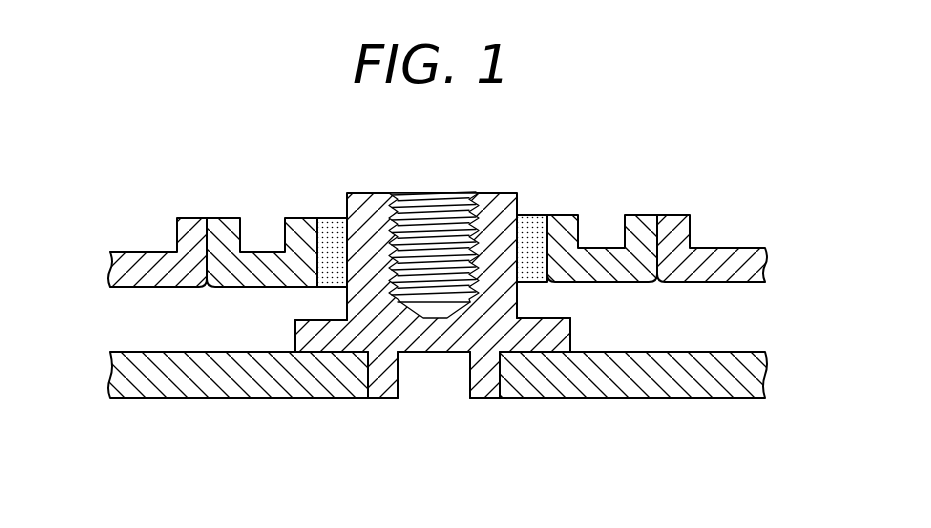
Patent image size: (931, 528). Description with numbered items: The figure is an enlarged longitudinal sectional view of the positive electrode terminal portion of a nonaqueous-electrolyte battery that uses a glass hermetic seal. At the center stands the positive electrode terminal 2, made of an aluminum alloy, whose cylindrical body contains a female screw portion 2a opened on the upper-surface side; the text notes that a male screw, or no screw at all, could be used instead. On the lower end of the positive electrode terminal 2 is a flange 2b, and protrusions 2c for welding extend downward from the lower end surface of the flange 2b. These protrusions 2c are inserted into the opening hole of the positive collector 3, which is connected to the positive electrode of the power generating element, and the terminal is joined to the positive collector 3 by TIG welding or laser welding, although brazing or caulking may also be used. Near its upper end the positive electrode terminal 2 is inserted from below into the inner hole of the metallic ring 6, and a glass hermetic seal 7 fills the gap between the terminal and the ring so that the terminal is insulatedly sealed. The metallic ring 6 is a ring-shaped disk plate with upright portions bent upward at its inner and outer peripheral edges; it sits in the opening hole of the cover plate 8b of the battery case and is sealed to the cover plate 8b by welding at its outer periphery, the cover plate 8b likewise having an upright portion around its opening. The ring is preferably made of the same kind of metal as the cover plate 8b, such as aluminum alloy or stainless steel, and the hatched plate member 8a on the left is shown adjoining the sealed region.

The positive electrode terminal 2 is at (495, 193).
The female screw portion 2a is at (456, 220).
The flange 2b is at (575, 329).
The protrusions for welding 2c is at (473, 399).
The positive collector 3 is at (213, 360).
The metallic ring 6 is at (611, 251).
The glass hermetic seal 7 is at (333, 218).
The left plate member 8a is at (157, 252).
The cover plate 8b is at (713, 250).